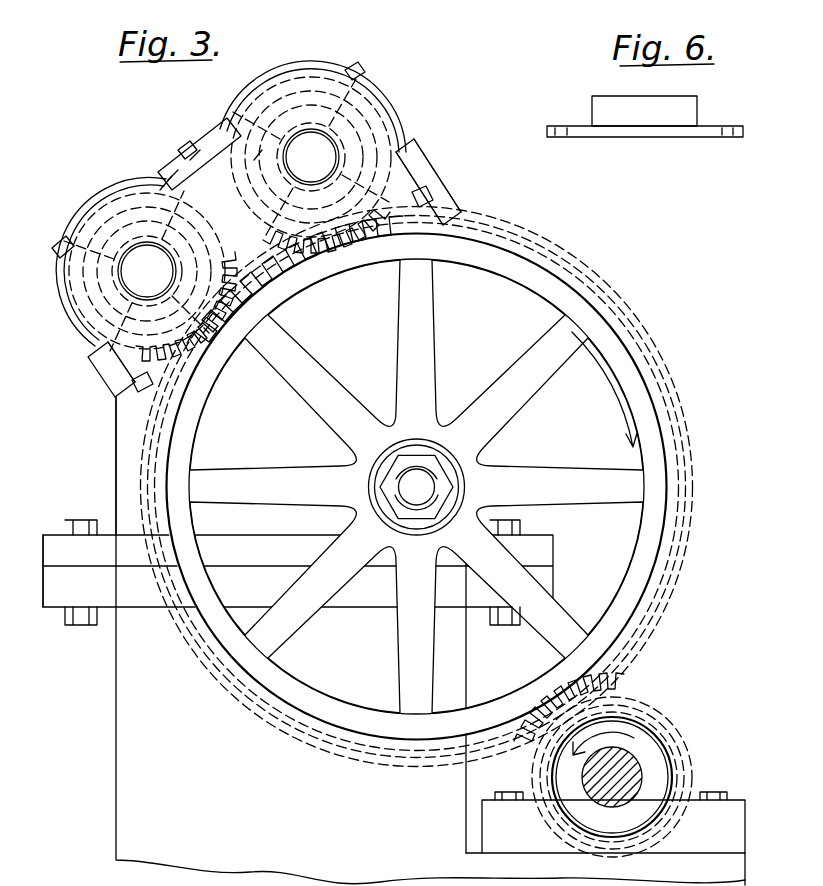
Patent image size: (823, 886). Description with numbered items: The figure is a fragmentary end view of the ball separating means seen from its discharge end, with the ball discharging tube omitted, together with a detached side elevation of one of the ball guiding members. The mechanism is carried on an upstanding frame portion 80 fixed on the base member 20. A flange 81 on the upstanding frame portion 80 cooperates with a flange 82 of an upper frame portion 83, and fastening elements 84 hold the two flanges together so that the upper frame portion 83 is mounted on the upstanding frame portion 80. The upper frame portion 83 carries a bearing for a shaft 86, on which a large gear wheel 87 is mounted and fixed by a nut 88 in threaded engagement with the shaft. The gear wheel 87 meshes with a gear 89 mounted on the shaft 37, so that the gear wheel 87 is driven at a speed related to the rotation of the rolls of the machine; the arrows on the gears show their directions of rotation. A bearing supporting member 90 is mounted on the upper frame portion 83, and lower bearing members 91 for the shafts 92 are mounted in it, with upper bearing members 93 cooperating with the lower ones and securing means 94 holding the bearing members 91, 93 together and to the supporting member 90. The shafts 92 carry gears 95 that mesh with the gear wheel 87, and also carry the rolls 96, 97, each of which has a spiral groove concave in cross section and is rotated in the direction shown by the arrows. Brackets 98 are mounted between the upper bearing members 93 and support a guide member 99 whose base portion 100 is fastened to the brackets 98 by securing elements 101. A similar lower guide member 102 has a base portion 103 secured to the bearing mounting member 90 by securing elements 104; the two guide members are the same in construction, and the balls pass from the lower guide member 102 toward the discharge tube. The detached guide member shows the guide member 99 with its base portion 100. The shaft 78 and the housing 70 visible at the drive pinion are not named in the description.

In FIG. 3, the base member 20 is at (742, 870).
In FIG. 3, the shaft 37 is at (622, 766).
In FIG. 3, the bearing housing 70 is at (732, 808).
In FIG. 3, the gear shaft 78 is at (270, 195).
In FIG. 3, the upstanding frame portion 80 is at (116, 738).
In FIG. 3, the flange 81 is at (63, 596).
In FIG. 3, the flange 82 is at (53, 546).
In FIG. 3, the upper frame portion 83 is at (118, 445).
In FIG. 3, the fastening elements 84 is at (515, 655).
In FIG. 3, the shaft 86 is at (425, 490).
In FIG. 3, the large gear wheel 87 is at (330, 738).
In FIG. 3, the nut 88 is at (405, 455).
In FIG. 3, the gear 89 is at (607, 702).
In FIG. 3, the bearing supporting member 90 is at (436, 172).
In FIG. 3, the lower bearing members 91 is at (400, 143).
In FIG. 3, the shafts 92 is at (145, 258).
In FIG. 3, the upper bearing members 93 is at (112, 190).
In FIG. 3, the securing means 94 is at (66, 238).
In FIG. 3, the gears 95 is at (418, 176).
In FIG. 3, the roll 96 is at (90, 206).
In FIG. 3, the roll 97 is at (300, 68).
In FIG. 3, the brackets 98 is at (203, 160).
In FIG. 3, the guide member 99 is at (262, 159).
In FIG. 6, the guide member 99 is at (657, 100).
In FIG. 3, the base portion 100 is at (175, 175).
In FIG. 6, the base portion 100 is at (652, 139).
In FIG. 3, the securing elements 101 is at (170, 165).
In FIG. 3, the guide member 102 is at (260, 252).
In FIG. 3, the base portion 103 is at (262, 282).
In FIG. 3, the securing elements 104 is at (205, 286).